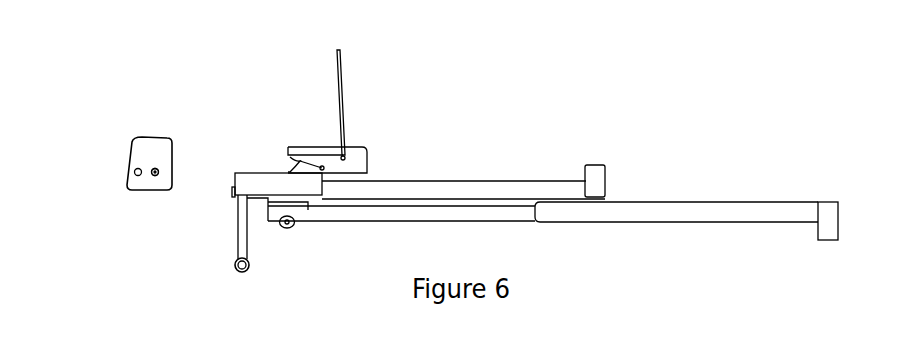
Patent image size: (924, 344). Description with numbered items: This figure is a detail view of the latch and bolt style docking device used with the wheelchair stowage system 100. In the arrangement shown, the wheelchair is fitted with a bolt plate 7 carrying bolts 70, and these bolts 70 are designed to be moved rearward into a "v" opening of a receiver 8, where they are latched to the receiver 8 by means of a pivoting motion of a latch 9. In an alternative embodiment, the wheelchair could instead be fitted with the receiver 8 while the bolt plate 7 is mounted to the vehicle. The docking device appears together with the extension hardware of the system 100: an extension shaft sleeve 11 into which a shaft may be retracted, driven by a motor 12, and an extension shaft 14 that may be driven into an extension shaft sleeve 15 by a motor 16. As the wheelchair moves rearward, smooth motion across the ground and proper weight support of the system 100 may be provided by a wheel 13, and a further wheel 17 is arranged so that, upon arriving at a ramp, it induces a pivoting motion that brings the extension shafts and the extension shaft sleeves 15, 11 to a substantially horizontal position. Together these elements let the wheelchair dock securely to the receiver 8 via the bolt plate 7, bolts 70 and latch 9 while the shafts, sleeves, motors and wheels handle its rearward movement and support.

The system 100 is at (762, 97).
The bolt plate 7 is at (158, 152).
The bolt 70 is at (152, 176).
The receiver 8 is at (358, 158).
The latch 9 is at (335, 87).
The extension shaft sleeve 11 is at (482, 191).
The motor 12 is at (593, 170).
The wheel 13 is at (234, 270).
The extension shaft 14 is at (365, 213).
The extension shaft sleeve 15 is at (698, 220).
The motor 16 is at (826, 215).
The wheel 17 is at (290, 228).